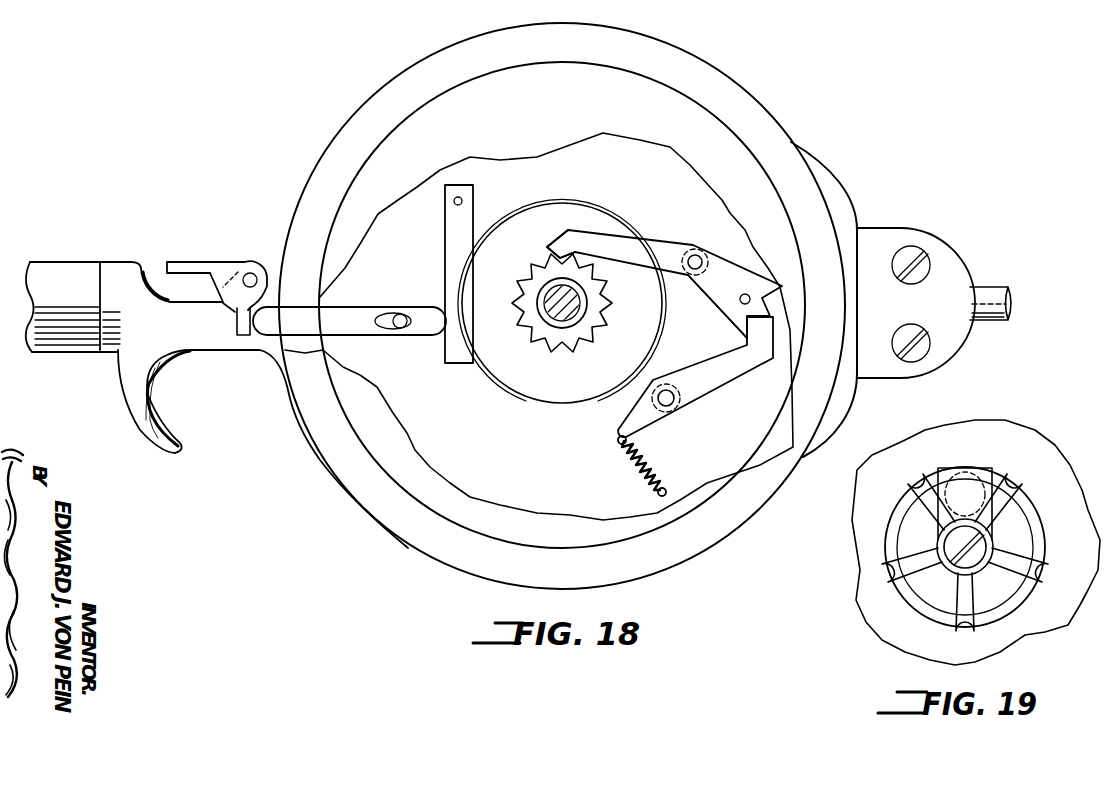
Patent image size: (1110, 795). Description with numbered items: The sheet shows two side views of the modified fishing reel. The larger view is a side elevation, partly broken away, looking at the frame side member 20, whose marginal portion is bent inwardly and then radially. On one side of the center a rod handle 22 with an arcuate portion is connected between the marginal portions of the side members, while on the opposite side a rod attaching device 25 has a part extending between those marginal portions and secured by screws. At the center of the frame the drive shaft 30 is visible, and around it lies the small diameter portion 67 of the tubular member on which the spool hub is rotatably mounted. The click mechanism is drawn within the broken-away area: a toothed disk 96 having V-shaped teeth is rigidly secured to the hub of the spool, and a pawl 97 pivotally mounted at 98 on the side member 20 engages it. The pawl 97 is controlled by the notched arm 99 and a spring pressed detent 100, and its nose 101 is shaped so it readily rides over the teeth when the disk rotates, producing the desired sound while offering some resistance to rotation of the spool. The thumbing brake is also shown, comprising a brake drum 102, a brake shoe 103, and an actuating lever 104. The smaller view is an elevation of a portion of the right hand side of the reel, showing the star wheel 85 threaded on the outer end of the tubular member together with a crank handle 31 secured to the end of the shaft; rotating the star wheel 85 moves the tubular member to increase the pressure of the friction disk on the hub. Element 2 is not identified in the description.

In FIG. 18, the side member 20 is at (717, 143).
In FIG. 18, the rod handle 22 is at (127, 275).
In FIG. 18, the rod attaching device 25 is at (943, 263).
In FIG. 18, the drive shaft 30 is at (557, 315).
In FIG. 18, the small diameter portion 67 is at (588, 311).
In FIG. 18, the toothed disk 96 is at (577, 347).
In FIG. 18, the pawl 97 is at (627, 250).
In FIG. 18, the pivot 98 is at (697, 262).
In FIG. 18, the notched arm 99 is at (722, 303).
In FIG. 18, the spring pressed detent 100 is at (692, 398).
In FIG. 18, the nose 101 is at (548, 250).
In FIG. 18, the brake drum 102 is at (530, 402).
In FIG. 18, the brake shoe 103 is at (457, 217).
In FIG. 18, the actuating lever 104 is at (242, 315).
In FIG. 19, the casing wall 2 is at (1042, 508).
In FIG. 19, the crank handle 31 is at (975, 487).
In FIG. 19, the star wheel 85 is at (933, 557).